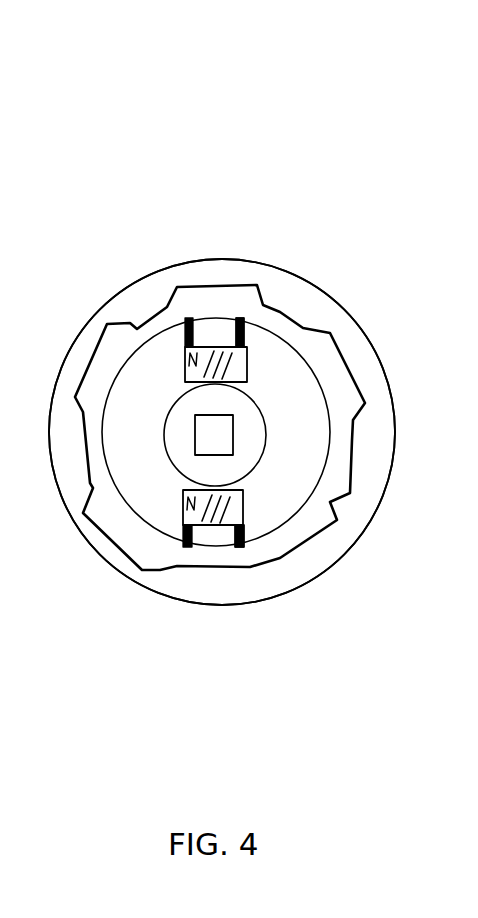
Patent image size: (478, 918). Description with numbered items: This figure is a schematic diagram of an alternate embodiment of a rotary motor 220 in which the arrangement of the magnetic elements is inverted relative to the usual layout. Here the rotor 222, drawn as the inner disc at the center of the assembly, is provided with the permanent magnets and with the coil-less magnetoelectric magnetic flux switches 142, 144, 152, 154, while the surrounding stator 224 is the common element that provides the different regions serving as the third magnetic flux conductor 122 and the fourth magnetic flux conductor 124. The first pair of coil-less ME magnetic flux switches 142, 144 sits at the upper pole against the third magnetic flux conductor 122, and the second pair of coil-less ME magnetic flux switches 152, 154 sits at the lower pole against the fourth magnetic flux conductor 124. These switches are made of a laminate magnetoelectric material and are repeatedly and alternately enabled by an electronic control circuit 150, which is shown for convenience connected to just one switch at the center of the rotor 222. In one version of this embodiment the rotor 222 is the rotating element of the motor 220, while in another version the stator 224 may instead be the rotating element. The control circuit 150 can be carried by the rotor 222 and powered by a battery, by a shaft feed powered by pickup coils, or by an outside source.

The rotary motor 220 is at (340, 212).
The third magnetic flux conductor 122 is at (155, 283).
The fourth magnetic flux conductor 124 is at (207, 603).
The stator 224 is at (375, 348).
The rotor 222 is at (305, 480).
The electronic control circuit 150 is at (232, 434).
The coil-less ME magnetic flux switch 142 is at (216, 316).
The coil-less ME magnetic flux switch 144 is at (248, 327).
The coil-less ME magnetic flux switch 152 is at (183, 548).
The coil-less ME magnetic flux switch 154 is at (275, 570).